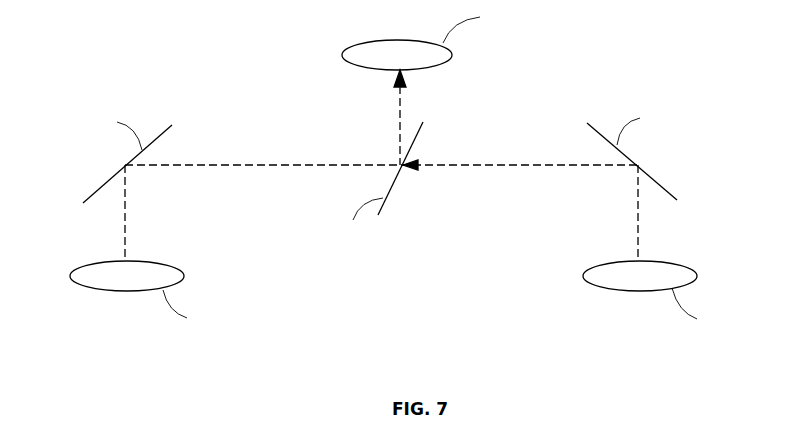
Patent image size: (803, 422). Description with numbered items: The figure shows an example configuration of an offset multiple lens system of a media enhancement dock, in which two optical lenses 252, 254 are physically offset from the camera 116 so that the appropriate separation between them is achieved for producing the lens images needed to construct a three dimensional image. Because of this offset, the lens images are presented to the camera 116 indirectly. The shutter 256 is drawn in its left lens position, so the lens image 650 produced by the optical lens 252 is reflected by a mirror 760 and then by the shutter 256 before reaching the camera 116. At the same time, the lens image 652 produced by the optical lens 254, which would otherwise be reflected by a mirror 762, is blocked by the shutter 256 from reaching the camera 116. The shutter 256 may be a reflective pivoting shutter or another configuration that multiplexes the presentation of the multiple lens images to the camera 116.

The camera 116 is at (353, 43).
The optical lens 252 is at (85, 265).
The optical lens 254 is at (602, 265).
The shutter 256 is at (393, 185).
The lens image 650 is at (125, 223).
The lens image 652 is at (638, 212).
The mirror 760 is at (85, 195).
The mirror 762 is at (672, 193).